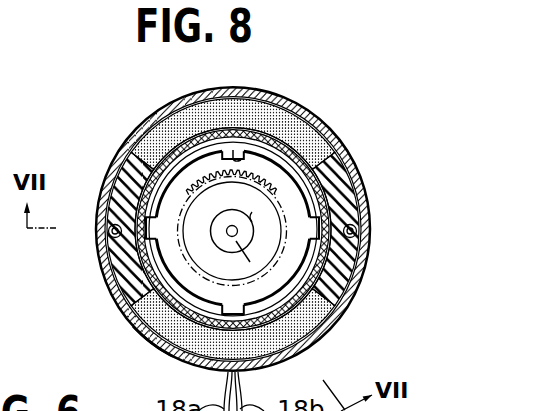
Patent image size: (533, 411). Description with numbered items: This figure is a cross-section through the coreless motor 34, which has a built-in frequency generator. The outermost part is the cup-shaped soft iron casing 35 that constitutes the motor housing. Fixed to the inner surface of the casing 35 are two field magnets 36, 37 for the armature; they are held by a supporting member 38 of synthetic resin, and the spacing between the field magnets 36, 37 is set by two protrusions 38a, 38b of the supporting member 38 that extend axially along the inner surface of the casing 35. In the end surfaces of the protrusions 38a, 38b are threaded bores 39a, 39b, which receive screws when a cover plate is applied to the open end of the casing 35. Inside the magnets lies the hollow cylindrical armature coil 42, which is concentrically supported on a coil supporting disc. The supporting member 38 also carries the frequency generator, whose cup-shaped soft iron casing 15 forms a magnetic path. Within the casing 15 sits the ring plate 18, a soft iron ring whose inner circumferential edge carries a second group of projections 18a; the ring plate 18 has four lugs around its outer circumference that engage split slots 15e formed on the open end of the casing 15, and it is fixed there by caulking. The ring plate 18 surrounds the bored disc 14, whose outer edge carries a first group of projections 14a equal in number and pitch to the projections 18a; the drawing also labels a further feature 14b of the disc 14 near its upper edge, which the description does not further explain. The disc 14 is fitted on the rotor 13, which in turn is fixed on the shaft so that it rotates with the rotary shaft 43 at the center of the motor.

The rotor 13 is at (226, 252).
The bored disc 14 is at (265, 250).
The first group of projections 14a is at (232, 231).
The rotor tab 14b is at (233, 150).
The casing 15 is at (272, 160).
The split slots 15e is at (247, 150).
The ring plate 18 is at (262, 292).
The second group of projections 18a is at (202, 170).
The coreless motor 34 is at (281, 88).
The casing 35 is at (303, 110).
The field magnet 36 is at (150, 142).
The field magnet 37 is at (155, 347).
The supporting member 38 is at (122, 173).
The protrusion 38a is at (110, 196).
The protrusion 38b is at (345, 185).
The threaded bore 39a is at (114, 244).
The threaded bore 39b is at (357, 229).
The armature coil 42 is at (148, 326).
The rotary shaft 43 is at (233, 226).